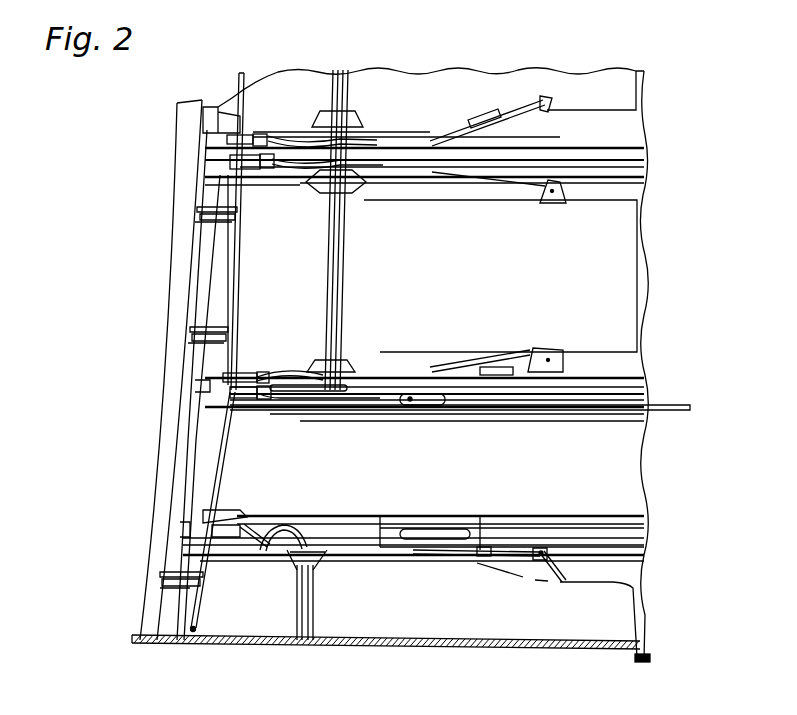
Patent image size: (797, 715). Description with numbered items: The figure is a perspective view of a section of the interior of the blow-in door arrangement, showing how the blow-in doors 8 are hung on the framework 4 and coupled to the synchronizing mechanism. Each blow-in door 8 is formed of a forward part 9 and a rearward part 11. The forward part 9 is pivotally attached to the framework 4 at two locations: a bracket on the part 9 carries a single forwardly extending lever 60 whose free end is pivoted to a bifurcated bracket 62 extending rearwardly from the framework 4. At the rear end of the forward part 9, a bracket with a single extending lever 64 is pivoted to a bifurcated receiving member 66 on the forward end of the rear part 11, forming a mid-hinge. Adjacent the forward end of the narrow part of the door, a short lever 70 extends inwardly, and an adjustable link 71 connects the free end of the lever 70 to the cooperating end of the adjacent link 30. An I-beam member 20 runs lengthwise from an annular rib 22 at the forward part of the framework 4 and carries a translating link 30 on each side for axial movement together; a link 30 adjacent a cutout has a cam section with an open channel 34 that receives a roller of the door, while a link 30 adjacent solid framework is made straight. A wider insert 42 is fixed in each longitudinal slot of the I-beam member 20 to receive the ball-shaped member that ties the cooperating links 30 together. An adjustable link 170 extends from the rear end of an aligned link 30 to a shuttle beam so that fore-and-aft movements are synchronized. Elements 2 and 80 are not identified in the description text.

The vehicle floor 2 is at (144, 643).
The framework 4 is at (526, 475).
The blow-in doors 8 is at (411, 70).
The forward part 9 is at (298, 109).
The rearward part 11 is at (443, 109).
The I-beam member 20 is at (645, 151).
The annular rib 22 is at (180, 428).
The translating link 30 is at (377, 131).
The open channel 34 is at (245, 547).
The insert 42 is at (476, 406).
The lever 60 is at (232, 213).
The bifurcated bracket 62 is at (200, 222).
The lever 64 is at (297, 560).
The bifurcated receiving member 66 is at (325, 560).
The short lever 70 is at (545, 569).
The adjustable link 71 is at (530, 116).
The vertical rod 80 is at (240, 84).
The adjustable link 170 is at (690, 411).